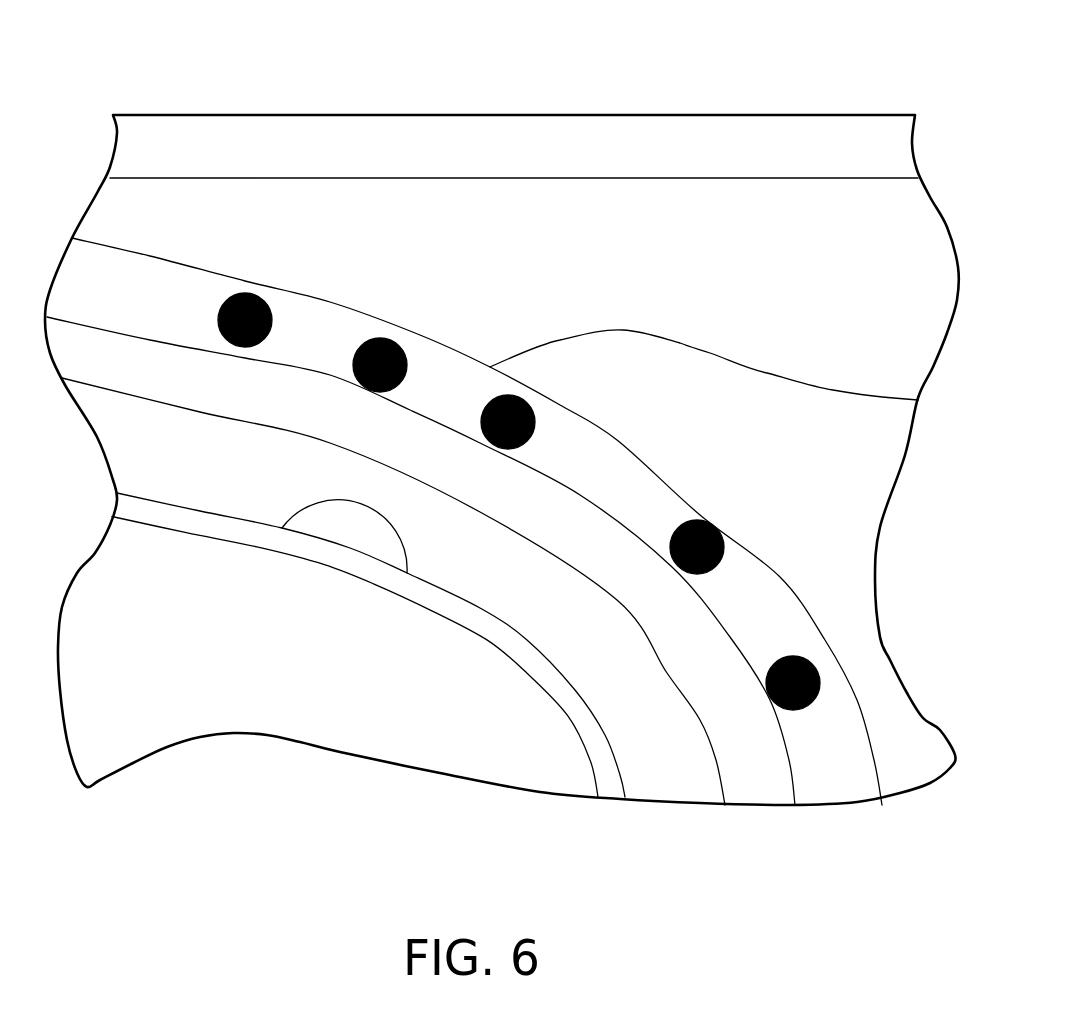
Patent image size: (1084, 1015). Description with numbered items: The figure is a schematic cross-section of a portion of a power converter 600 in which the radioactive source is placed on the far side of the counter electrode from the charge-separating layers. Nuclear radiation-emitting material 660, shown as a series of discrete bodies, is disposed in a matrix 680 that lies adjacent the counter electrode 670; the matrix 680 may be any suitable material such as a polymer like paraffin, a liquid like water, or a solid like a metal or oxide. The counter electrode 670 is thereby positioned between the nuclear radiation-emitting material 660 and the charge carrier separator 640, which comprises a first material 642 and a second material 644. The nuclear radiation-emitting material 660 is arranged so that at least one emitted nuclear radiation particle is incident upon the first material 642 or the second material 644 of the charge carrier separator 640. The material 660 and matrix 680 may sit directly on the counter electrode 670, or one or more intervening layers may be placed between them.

The power converter 600 is at (390, 68).
The matrix 680 is at (147, 250).
The nuclear radiation-emitting material 660 is at (360, 338).
The counter electrode 670 is at (748, 808).
The charge carrier separator 640 is at (334, 612).
The first material 642 is at (612, 802).
The second material 644 is at (290, 522).